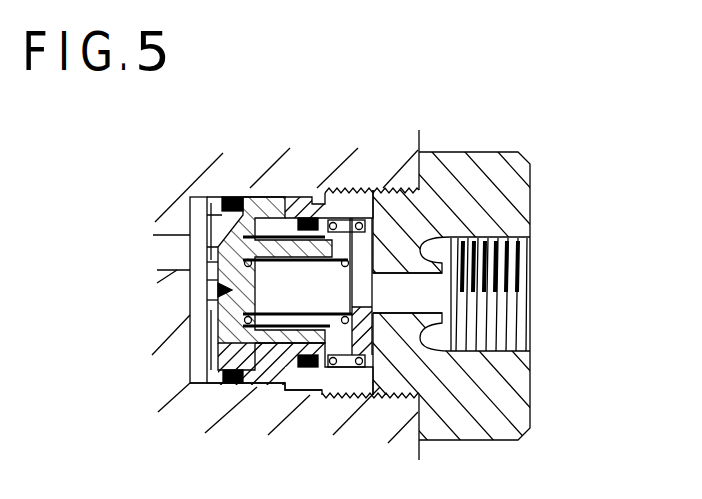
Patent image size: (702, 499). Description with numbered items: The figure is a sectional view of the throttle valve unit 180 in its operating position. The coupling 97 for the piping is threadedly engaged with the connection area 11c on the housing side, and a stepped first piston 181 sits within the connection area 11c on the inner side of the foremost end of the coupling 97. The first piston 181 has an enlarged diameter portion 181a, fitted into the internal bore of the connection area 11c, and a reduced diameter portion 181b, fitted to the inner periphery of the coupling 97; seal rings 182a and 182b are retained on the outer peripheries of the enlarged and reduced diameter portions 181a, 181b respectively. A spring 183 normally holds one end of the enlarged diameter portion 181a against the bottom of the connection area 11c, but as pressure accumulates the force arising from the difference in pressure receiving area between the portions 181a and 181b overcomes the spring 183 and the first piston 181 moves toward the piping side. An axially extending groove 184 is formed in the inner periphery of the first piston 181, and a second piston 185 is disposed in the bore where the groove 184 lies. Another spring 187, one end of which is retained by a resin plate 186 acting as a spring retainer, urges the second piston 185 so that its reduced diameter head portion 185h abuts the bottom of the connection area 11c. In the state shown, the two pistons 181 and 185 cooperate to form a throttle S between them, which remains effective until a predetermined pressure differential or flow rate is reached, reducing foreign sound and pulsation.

The coupling 97 is at (520, 190).
The throttle valve unit 180 is at (355, 187).
The stepped piston 181 is at (187, 215).
The enlarged diameter portion 181a is at (212, 387).
The reduced diameter portion 181b is at (277, 390).
The seal ring 182a is at (232, 200).
The seal ring 182b is at (308, 216).
The spring 183 is at (343, 387).
The axially extending groove 184 is at (328, 224).
The second piston 185 is at (190, 313).
The head portion 185h is at (190, 282).
The resin plate 186 is at (435, 325).
The spring 187 is at (330, 260).
The connection area 11c is at (192, 398).
The throttle S is at (190, 243).